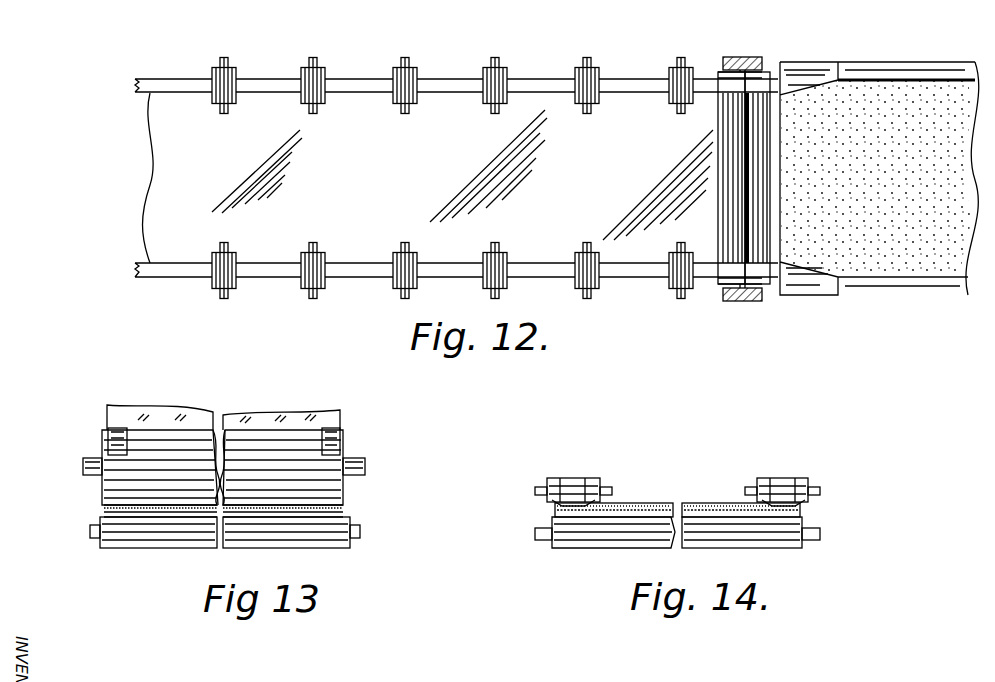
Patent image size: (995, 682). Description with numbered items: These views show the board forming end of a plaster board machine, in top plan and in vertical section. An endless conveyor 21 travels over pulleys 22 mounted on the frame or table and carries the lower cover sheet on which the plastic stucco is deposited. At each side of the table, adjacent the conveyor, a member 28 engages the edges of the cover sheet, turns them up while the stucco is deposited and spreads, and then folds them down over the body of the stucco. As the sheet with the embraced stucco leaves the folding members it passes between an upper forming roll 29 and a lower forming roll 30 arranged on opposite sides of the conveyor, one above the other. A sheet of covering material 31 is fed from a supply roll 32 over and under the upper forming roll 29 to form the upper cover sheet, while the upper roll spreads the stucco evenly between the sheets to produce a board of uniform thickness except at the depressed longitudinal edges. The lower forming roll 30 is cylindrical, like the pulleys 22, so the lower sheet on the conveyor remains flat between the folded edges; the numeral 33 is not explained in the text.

In FIG. 12, the endless conveyor 21 is at (148, 273).
In FIG. 14, the endless conveyor 21 is at (620, 518).
In FIG. 14, the pulleys 22 is at (580, 533).
In FIG. 12, the member 28 is at (883, 78).
In FIG. 12, the upper forming roll 29 is at (717, 227).
In FIG. 13, the upper forming roll 29 is at (115, 480).
In FIG. 13, the lower forming roll 30 is at (333, 535).
In FIG. 12, the covering material 31 is at (740, 147).
In FIG. 13, the covering material 31 is at (158, 402).
In FIG. 14, the covering material 31 is at (645, 502).
In FIG. 12, the supply roll 32 is at (632, 270).
In FIG. 13, the supply roll 32 is at (330, 427).
In FIG. 14, the supply roll 32 is at (577, 475).
In FIG. 14, the bearing support 33 is at (545, 477).